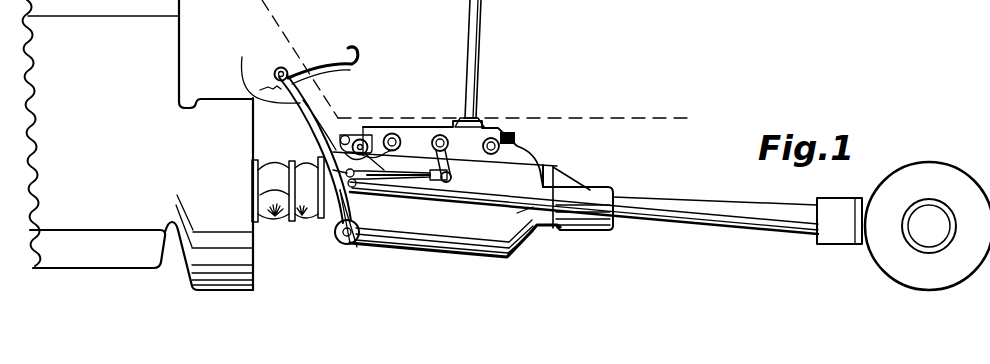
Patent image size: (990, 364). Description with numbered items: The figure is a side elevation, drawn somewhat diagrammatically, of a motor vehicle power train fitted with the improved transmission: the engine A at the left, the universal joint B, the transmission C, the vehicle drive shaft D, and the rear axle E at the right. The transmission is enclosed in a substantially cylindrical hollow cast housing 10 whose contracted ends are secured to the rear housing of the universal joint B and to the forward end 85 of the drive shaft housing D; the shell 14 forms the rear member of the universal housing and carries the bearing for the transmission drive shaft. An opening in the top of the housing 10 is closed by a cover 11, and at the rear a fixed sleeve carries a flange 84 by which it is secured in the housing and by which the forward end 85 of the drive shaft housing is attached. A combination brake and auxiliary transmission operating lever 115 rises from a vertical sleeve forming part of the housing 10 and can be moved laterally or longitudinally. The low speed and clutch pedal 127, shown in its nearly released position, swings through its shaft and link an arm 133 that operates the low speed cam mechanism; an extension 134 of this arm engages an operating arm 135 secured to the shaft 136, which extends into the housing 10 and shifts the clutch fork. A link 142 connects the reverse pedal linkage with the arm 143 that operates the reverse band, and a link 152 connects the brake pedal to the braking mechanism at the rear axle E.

The transmission housing 10 is at (473, 189).
The cover 11 is at (391, 122).
The shell 14 is at (303, 162).
The flange 84 is at (553, 168).
The forward end of the drive shaft housing 85 is at (566, 190).
The combination brake and auxiliary transmission operating lever 115 is at (474, 44).
The low speed and clutch pedal 127 is at (294, 142).
The arm 133 is at (365, 138).
The extension 134 is at (333, 128).
The operating arm 135 is at (348, 130).
The shaft 136 is at (358, 72).
The link 142 is at (401, 172).
The arm 143 is at (452, 171).
The link 152 is at (418, 122).
The engine A is at (138, 145).
The universal joint B is at (277, 195).
The transmission C is at (398, 216).
The vehicle drive shaft D is at (742, 201).
The rear axle E is at (927, 226).